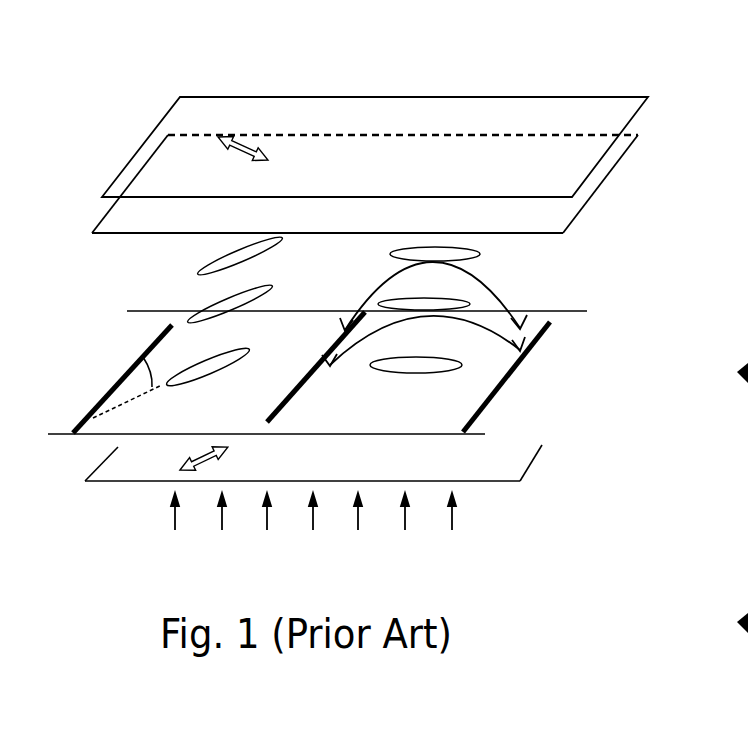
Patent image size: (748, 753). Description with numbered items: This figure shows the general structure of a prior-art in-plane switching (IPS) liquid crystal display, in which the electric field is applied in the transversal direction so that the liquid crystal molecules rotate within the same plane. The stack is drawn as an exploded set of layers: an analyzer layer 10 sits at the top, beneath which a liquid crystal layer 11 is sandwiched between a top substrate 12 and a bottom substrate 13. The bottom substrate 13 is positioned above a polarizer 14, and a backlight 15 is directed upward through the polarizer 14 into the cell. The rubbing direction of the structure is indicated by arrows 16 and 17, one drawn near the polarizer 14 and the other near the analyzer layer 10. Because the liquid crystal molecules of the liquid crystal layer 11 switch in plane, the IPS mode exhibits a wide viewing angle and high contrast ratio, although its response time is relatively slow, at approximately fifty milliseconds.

The analyzer layer 10 is at (610, 113).
The liquid crystal layer 11 is at (520, 285).
The top substrate 12 is at (545, 215).
The bottom substrate 13 is at (518, 393).
The polarizer 14 is at (492, 468).
The backlight 15 is at (463, 523).
The arrow indicating rubbing direction 16 is at (180, 468).
The arrow indicating rubbing direction 17 is at (218, 137).